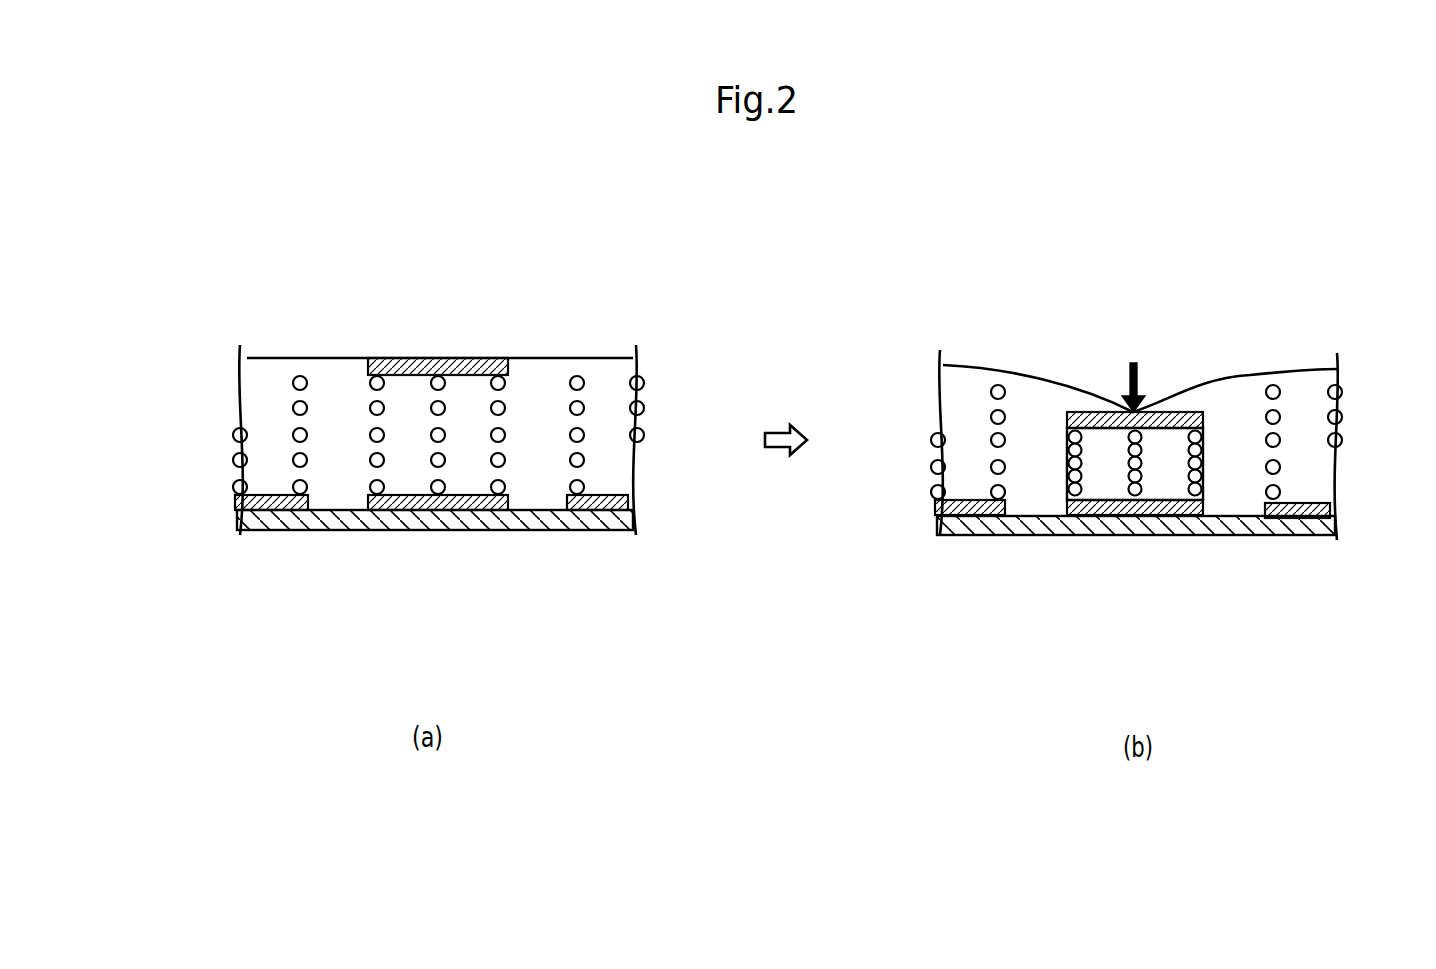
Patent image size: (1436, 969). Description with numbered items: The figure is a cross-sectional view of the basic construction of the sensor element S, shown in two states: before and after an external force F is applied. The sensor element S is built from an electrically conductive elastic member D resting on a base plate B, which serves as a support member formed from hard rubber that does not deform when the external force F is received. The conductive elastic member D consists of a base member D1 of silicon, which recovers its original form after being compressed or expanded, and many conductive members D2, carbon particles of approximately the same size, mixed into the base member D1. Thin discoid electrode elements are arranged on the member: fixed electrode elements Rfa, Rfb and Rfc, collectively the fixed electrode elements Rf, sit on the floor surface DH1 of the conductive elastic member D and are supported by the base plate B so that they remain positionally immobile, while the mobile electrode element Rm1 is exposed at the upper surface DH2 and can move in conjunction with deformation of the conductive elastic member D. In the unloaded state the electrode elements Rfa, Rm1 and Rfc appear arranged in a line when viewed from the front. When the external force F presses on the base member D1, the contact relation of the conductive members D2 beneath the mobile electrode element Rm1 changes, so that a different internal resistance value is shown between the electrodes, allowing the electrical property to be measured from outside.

The sensor element S is at (266, 288).
The conductive elastic member D is at (226, 384).
The base member D1 is at (343, 372).
The conductive members D2 is at (240, 455).
The surface of the conductive elastic member DH2 is at (540, 358).
The floor surface of the conductive elastic member DH1 is at (622, 530).
The mobile electrode element Rm1 is at (450, 358).
The fixed electrode elements Rf is at (600, 588).
The fixed electrode element Rfa is at (264, 512).
The fixed electrode element Rfb is at (427, 512).
The fixed electrode element Rfc is at (585, 512).
The base plate B is at (633, 522).
The external force F is at (1143, 362).